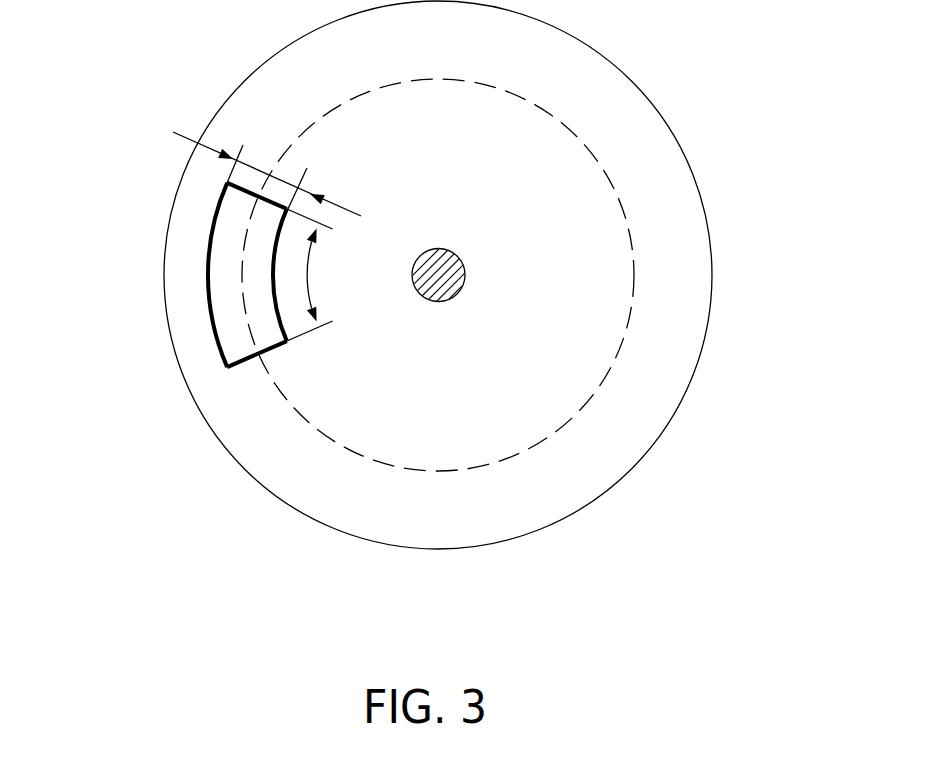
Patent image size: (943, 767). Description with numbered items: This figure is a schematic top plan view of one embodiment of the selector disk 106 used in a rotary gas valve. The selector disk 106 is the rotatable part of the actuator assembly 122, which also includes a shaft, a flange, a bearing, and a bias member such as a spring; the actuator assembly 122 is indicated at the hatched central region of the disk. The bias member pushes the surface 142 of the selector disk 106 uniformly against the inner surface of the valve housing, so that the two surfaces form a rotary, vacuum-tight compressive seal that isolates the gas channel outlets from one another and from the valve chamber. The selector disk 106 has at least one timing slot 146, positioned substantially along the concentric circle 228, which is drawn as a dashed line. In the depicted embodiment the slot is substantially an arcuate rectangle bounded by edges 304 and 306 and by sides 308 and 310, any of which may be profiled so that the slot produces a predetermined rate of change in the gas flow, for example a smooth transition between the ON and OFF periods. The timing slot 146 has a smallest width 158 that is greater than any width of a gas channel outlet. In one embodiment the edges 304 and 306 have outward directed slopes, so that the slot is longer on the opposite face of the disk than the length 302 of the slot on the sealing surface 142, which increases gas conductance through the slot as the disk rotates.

The selector disk 106 is at (682, 150).
The surface of the selector disk 142 is at (677, 287).
The concentric circle 228 is at (285, 401).
The actuator assembly 122 is at (465, 272).
The edge of the timing slot 304 is at (242, 362).
The side of the timing slot 308 is at (208, 252).
The side of the timing slot 310 is at (273, 293).
The edge of the timing slot 306 is at (243, 194).
The timing slot 146 is at (221, 349).
The smallest width of the timing slot 158 is at (281, 174).
The length of the slot 302 is at (310, 278).